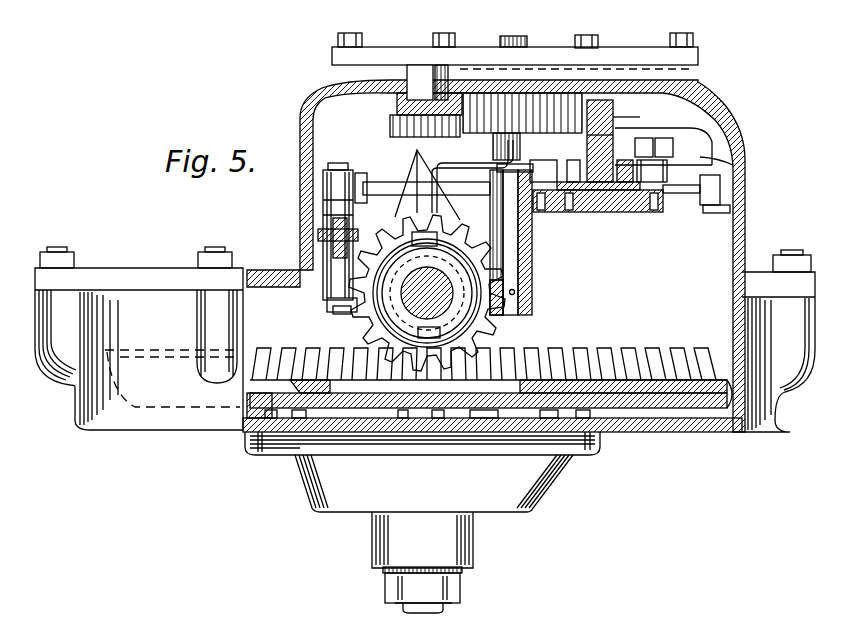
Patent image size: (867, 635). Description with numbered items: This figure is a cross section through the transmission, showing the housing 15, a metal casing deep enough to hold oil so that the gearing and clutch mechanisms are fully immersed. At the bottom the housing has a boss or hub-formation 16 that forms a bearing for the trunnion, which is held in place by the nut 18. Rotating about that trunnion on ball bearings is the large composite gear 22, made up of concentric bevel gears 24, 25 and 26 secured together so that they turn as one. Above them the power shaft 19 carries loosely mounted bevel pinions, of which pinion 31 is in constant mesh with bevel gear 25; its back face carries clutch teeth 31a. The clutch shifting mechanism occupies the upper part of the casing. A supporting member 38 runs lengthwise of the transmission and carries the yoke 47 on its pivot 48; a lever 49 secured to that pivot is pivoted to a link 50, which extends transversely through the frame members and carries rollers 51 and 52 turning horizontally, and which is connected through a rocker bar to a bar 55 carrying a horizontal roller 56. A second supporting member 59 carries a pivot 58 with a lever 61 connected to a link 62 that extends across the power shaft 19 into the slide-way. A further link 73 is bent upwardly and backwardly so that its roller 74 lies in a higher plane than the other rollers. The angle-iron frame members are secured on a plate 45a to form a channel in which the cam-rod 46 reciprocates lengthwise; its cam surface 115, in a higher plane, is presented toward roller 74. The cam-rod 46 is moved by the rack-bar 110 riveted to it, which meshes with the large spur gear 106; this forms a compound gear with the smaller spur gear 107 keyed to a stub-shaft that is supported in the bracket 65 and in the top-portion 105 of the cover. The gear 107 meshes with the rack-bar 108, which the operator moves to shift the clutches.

The housing 15 is at (90, 427).
The boss or hub-formation 16 is at (466, 568).
The nut 18 is at (447, 603).
The power shaft 19 is at (453, 270).
The composite gear 22 is at (607, 410).
The bevel gear 24 is at (673, 339).
The bevel gear 25 is at (580, 352).
The bevel gear 26 is at (512, 344).
The beveled pinion 31 is at (520, 333).
The clutch teeth 31a is at (340, 300).
The supporting member 38 is at (532, 240).
The plate 45a is at (613, 212).
The cam-rod 46 is at (617, 108).
The yoke 47 is at (453, 250).
The pivot 48 is at (520, 267).
The lever 49 is at (541, 210).
The link 50 is at (569, 210).
The roller 51 is at (543, 153).
The roller 52 is at (654, 212).
The bar 55 is at (700, 190).
The roller 56 is at (700, 160).
The pivot 58 is at (341, 168).
The supporting member 59 is at (318, 235).
The lever 61 is at (323, 192).
The link 62 is at (408, 183).
The bracket 65 is at (412, 154).
The link 73 is at (688, 130).
The roller 74 is at (673, 147).
The top-portion of transmission cover member 105 is at (640, 42).
The spur gear 106 is at (390, 123).
The spur gear 107 is at (532, 96).
The rack-bar 108 is at (418, 73).
The rack-bar 110 is at (672, 82).
The cam surface 115 is at (640, 117).